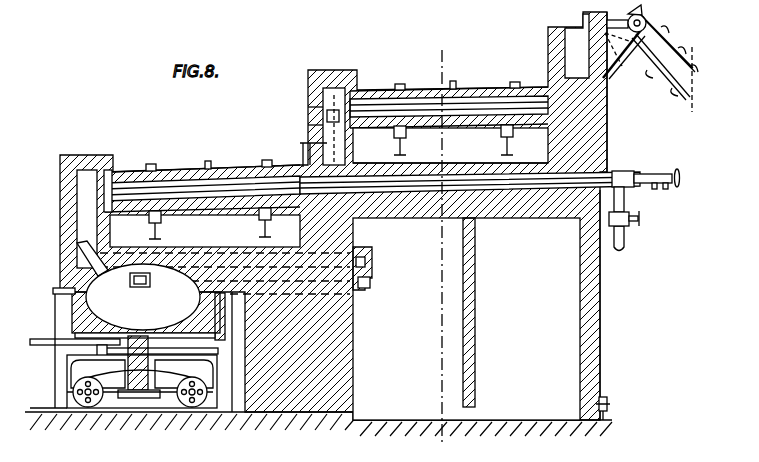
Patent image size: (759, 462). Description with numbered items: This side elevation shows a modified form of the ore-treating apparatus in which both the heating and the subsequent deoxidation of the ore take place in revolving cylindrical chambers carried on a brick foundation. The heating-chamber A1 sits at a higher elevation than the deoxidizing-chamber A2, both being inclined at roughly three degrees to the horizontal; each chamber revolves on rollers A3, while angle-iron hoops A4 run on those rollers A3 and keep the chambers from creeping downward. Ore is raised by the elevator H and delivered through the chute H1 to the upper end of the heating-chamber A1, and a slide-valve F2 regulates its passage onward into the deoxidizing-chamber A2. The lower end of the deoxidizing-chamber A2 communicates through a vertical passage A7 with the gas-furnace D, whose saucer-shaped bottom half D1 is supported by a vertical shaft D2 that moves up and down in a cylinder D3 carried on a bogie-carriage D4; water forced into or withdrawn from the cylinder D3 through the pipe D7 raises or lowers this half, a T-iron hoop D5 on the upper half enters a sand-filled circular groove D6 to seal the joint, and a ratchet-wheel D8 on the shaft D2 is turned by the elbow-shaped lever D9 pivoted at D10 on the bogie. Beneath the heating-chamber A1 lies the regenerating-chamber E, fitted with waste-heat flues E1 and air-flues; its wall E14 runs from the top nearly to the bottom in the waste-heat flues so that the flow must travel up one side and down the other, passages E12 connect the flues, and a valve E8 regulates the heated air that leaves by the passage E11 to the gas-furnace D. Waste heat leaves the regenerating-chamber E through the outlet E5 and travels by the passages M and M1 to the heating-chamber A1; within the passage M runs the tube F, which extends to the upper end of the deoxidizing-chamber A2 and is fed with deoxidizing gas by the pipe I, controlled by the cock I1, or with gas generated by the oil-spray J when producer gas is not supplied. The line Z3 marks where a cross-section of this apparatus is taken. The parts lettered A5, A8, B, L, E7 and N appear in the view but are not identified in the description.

The heating-chamber A1 is at (482, 90).
The deoxidizing-chamber A2 is at (180, 173).
The rollers A3 is at (162, 228).
The angle-iron hoops A4 is at (150, 166).
The fastening bolts A5 is at (209, 167).
The vertical passage A7 is at (87, 219).
The support bracket A8 is at (334, 126).
The frame B is at (55, 389).
The gas-furnace D is at (146, 301).
The bottom half of gas-furnace D1 is at (143, 297).
The vertical shaft D2 is at (133, 367).
The cylinder D3 is at (140, 401).
The bogie-carriage D4 is at (142, 373).
The hoop of T-iron D5 is at (226, 316).
The circular groove D6 is at (231, 352).
The pipe D7 is at (140, 394).
The ratchet-wheel D8 is at (146, 344).
The lever D9 is at (60, 341).
The pivot D10 is at (97, 350).
The regenerating-chamber E is at (466, 319).
The waste-heat flues E1 is at (155, 281).
The outlet E5 is at (312, 107).
The opening E7 is at (370, 287).
The valve E8 is at (610, 407).
The passage E11 is at (96, 264).
The passage E12 is at (366, 261).
The wall E14 is at (476, 381).
The tube F is at (513, 216).
The slide-valve F2 is at (300, 143).
The elevator H is at (652, 58).
The chute H1 is at (624, 54).
The pipe I is at (625, 248).
The cock I1 is at (639, 222).
The oil-spray J is at (668, 175).
The tower L is at (577, 46).
The passage M is at (456, 171).
The passage M1 is at (317, 125).
The chamber N is at (240, 212).
The section line Z3 is at (445, 245).